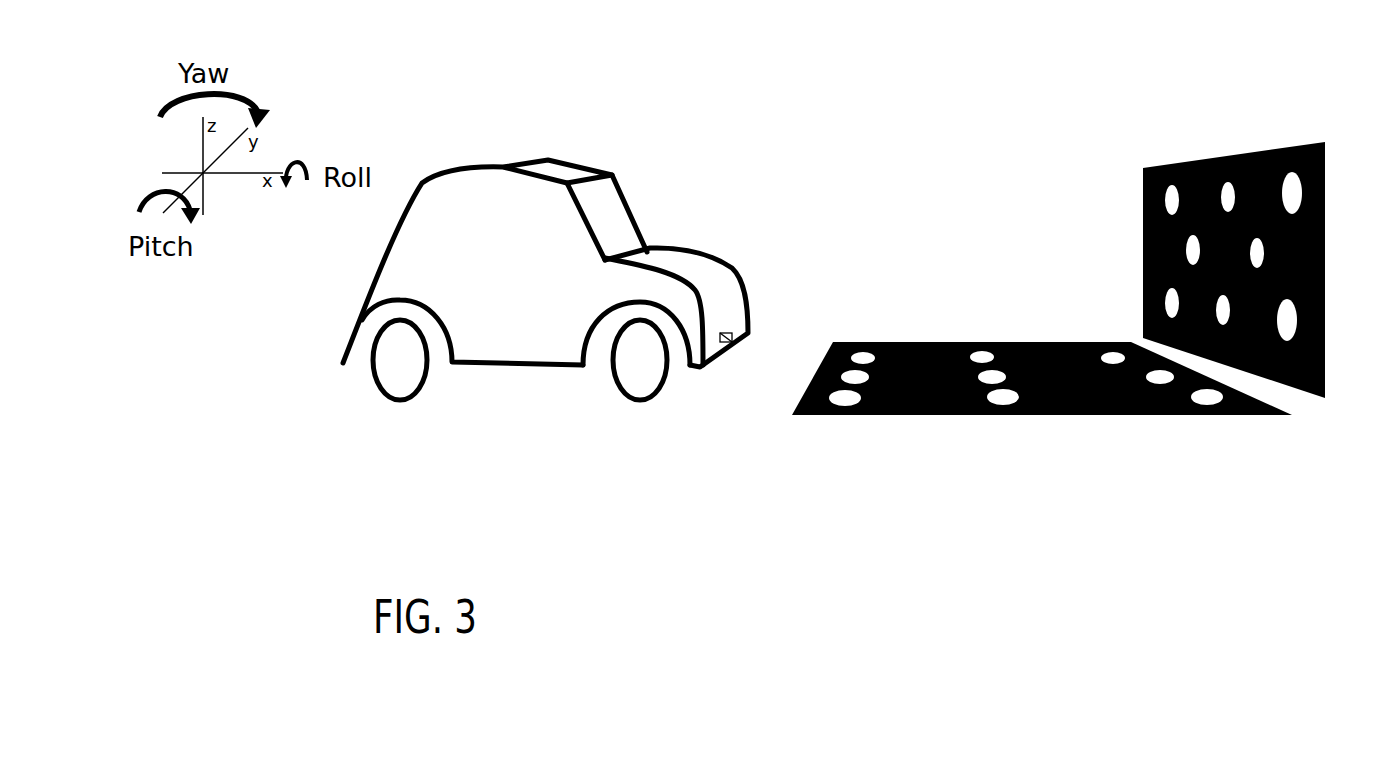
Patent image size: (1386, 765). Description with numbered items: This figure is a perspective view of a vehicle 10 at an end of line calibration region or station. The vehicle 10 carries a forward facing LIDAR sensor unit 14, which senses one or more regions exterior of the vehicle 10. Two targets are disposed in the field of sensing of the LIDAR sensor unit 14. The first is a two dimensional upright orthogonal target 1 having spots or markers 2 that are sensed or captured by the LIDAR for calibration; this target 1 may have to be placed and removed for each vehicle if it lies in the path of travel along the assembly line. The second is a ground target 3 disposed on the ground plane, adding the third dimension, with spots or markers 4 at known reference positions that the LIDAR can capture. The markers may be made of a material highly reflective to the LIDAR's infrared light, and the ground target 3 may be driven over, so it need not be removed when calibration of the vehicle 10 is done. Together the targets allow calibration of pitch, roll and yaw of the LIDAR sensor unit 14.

The orthogonal target 1 is at (1312, 377).
The markers 2 is at (1293, 328).
The ground target 3 is at (1067, 392).
The markers 4 is at (1170, 380).
The vehicle 10 is at (473, 343).
The LIDAR sensor unit 14 is at (732, 341).